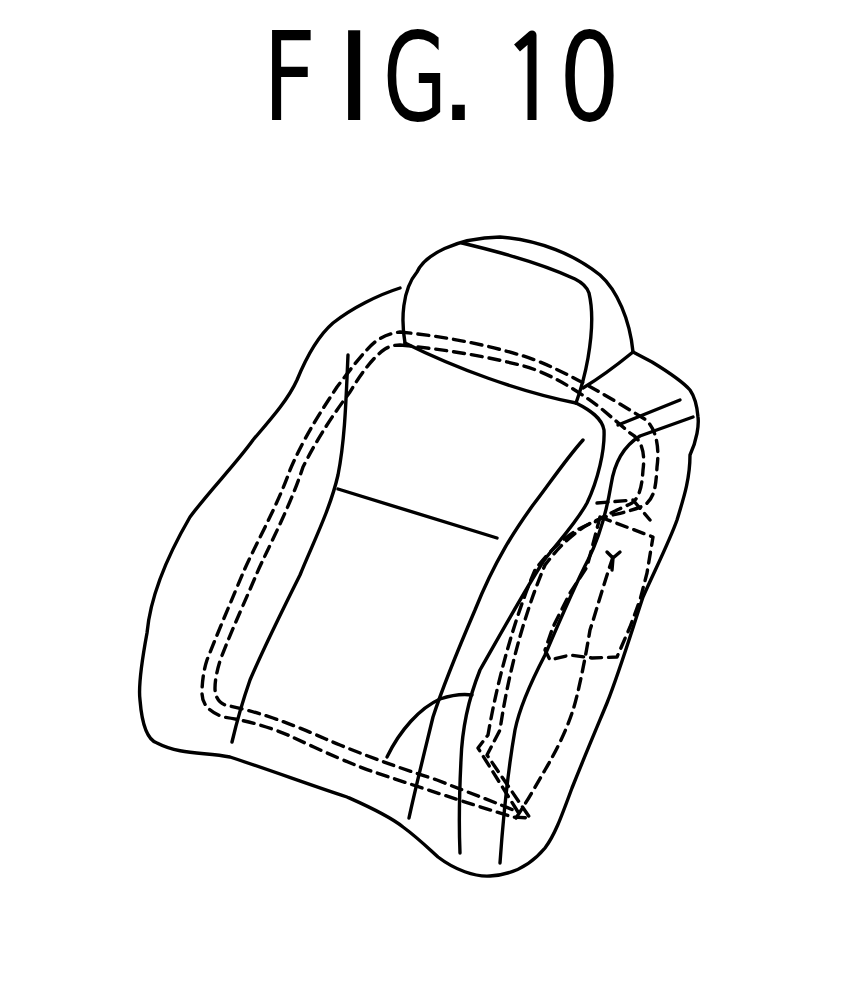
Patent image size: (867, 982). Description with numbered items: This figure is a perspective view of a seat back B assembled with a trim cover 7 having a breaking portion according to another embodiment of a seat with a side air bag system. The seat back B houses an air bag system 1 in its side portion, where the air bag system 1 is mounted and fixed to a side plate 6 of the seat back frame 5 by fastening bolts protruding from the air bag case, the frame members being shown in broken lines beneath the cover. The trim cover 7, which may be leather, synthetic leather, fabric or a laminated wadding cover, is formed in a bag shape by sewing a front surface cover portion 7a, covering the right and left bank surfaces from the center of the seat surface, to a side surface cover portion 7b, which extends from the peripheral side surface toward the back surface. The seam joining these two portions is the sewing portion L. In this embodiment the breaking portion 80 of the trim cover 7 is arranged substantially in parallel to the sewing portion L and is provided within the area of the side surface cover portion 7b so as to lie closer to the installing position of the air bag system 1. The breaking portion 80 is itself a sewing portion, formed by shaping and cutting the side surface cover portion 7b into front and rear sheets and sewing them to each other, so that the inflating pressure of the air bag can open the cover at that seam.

The seat back B is at (203, 468).
The air bag system 1 is at (625, 582).
The seat back frame 5 is at (310, 433).
The side plate 6 is at (545, 744).
The trim cover 7 is at (357, 673).
The front surface cover portion 7a is at (463, 640).
The side surface cover portion 7b is at (587, 702).
The sewing portion L is at (387, 757).
The breaking portion 80 is at (500, 768).